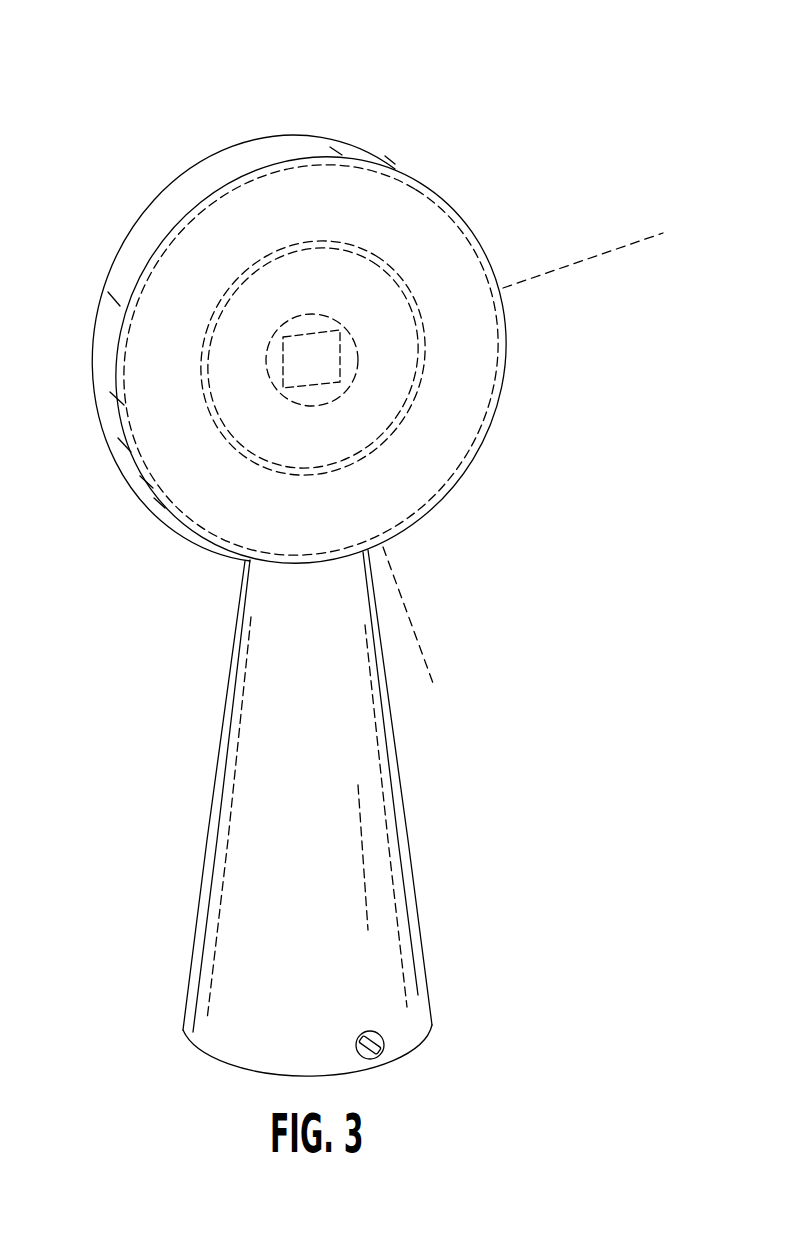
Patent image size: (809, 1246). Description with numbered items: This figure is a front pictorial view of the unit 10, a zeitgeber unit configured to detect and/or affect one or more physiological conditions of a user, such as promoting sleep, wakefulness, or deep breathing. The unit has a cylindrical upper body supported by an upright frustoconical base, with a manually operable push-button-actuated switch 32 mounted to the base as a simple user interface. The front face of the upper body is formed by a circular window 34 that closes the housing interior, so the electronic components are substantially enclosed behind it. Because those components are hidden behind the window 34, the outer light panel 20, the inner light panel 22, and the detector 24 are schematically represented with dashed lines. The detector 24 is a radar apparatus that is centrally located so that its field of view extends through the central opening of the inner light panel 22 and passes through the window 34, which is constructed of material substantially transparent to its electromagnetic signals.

The unit 10 is at (92, 110).
The outer light panel 20 is at (448, 210).
The inner light panel 22 is at (230, 293).
The detector 24 is at (283, 365).
The switch 32 is at (384, 1040).
The window 34 is at (609, 252).